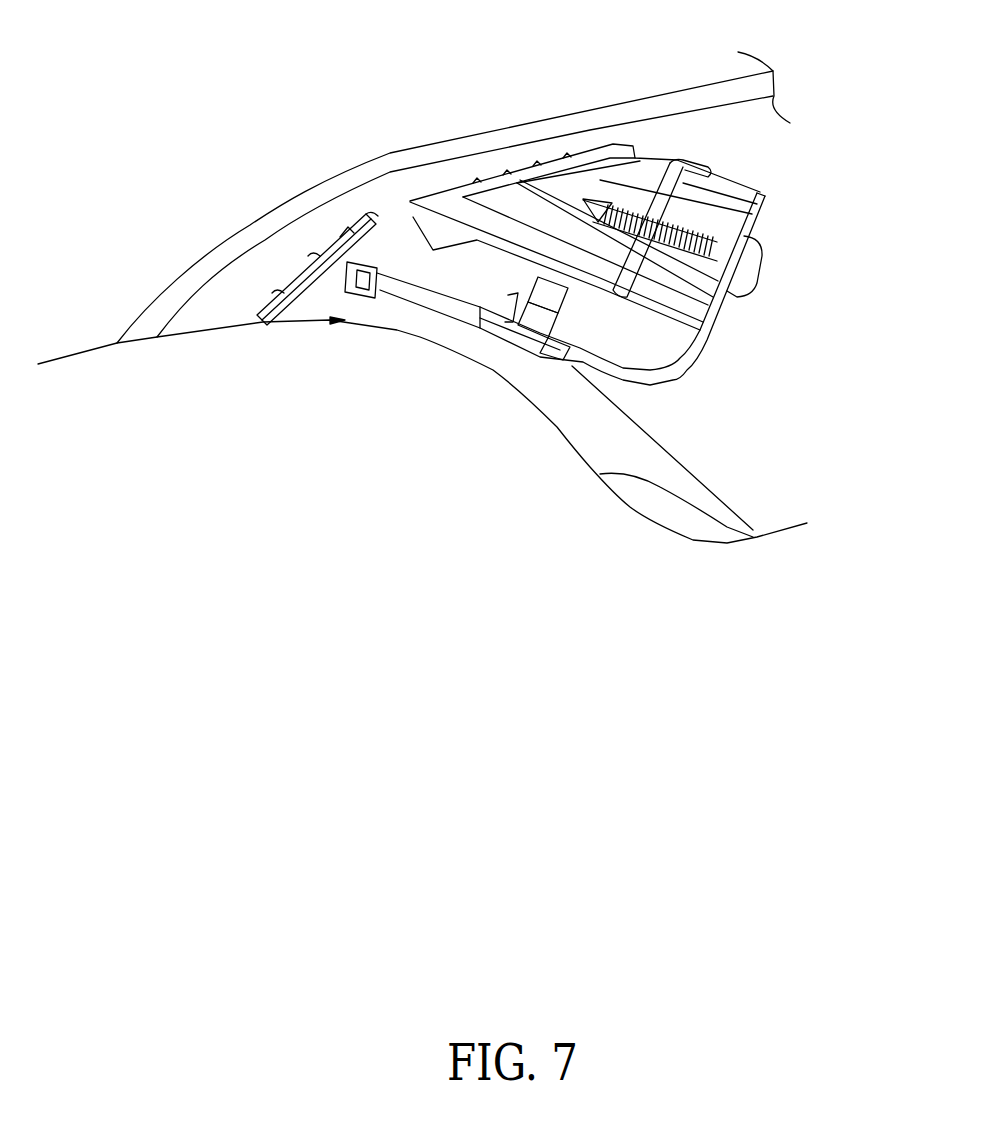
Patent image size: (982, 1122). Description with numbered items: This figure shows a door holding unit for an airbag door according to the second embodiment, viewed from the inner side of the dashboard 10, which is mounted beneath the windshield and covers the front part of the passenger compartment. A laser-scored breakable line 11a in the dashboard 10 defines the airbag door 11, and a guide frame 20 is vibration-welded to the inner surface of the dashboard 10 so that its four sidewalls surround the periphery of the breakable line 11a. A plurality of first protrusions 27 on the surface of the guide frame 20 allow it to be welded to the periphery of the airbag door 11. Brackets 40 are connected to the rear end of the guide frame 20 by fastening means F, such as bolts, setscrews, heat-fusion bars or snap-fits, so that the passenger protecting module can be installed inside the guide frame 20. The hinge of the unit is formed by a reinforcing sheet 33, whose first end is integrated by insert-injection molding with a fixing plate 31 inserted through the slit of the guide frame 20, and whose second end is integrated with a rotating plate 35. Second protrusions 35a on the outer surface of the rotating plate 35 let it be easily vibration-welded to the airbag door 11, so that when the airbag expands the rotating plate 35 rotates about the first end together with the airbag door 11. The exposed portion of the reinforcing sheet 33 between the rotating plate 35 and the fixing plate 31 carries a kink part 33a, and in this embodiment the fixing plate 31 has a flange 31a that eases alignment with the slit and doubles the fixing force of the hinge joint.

The dashboard 10 is at (490, 108).
The airbag door 11 is at (313, 196).
The breakable line 11a is at (343, 188).
The guide frame 20 is at (637, 157).
The first protrusions 27 is at (588, 150).
The fixing plate 31 is at (697, 171).
The flange 31a is at (670, 157).
The reinforcing sheet 33 is at (757, 218).
The kink part 33a is at (433, 232).
The rotating plate 35 is at (397, 220).
The second protrusions 35a is at (310, 268).
The brackets 40 is at (683, 363).
The fastening means F is at (750, 264).